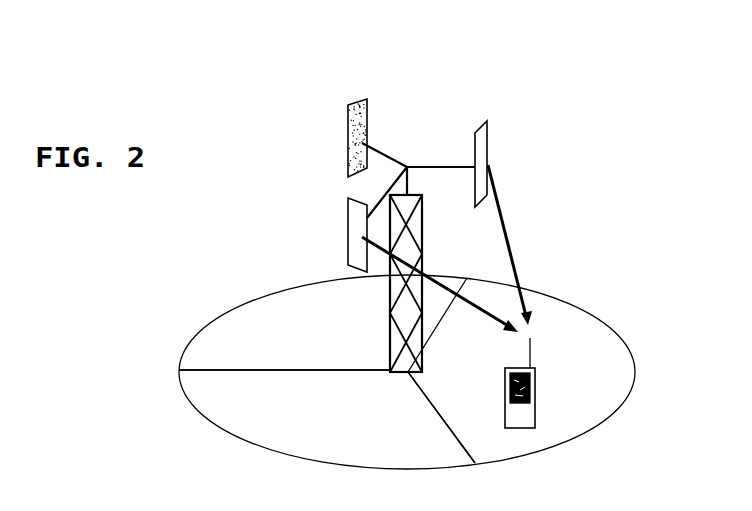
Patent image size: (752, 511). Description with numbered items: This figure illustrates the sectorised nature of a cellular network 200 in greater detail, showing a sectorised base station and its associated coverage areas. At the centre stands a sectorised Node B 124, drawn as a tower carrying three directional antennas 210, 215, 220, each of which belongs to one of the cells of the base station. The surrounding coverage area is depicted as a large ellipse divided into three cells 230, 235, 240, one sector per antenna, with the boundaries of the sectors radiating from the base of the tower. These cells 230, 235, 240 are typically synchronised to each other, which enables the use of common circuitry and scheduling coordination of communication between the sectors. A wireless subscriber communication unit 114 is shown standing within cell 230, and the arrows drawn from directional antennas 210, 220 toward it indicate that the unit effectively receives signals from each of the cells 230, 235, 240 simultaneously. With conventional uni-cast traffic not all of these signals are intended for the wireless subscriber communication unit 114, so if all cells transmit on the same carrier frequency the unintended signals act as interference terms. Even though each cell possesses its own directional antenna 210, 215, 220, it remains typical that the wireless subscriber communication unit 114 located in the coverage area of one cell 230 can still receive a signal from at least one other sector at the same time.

The cellular network 200 is at (215, 96).
The Node B 124 is at (613, 188).
The directional antenna 210 is at (347, 200).
The directional antenna 215 is at (345, 138).
The directional antenna 220 is at (487, 120).
The cell 230 is at (608, 325).
The cell 235 is at (205, 418).
The cell 240 is at (253, 300).
The wireless subscriber communication unit 114 is at (508, 368).